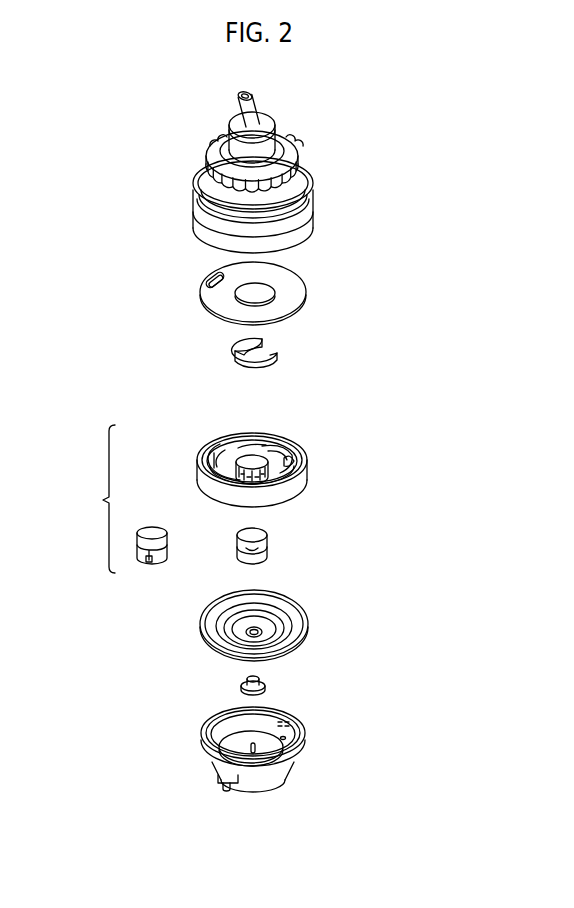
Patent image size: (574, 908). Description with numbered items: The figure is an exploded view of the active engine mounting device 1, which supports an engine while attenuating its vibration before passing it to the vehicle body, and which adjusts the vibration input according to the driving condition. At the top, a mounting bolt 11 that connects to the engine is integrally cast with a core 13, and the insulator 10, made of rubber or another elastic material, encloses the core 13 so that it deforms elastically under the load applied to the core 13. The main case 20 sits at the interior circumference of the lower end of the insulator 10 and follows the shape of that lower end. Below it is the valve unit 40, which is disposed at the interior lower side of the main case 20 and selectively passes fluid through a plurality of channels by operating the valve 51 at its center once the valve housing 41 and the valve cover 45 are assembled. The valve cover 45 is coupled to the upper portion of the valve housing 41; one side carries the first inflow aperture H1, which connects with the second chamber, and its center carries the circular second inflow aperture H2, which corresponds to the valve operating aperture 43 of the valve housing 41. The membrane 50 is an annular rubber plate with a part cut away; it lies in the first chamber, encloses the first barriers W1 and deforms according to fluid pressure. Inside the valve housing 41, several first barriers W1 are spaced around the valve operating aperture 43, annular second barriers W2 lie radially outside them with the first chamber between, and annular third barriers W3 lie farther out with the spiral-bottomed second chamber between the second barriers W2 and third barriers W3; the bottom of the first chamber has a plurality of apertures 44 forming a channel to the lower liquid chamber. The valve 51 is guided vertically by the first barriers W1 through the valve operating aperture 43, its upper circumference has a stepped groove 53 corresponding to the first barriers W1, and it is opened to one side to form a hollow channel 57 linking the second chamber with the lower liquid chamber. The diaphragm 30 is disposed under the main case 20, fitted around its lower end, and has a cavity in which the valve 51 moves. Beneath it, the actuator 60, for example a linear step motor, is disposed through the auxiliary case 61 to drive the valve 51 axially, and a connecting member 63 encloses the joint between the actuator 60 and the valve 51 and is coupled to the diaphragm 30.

The active engine mounting device 1 is at (112, 101).
The mounting bolt 11 is at (259, 103).
The core 13 is at (275, 122).
The insulator 10 is at (273, 153).
The main case 20 is at (306, 224).
The valve cover 45 is at (255, 305).
The first inflow aperture H1 is at (210, 290).
The second inflow aperture H2 is at (270, 300).
The membrane 50 is at (230, 357).
The valve unit 40 is at (231, 493).
The valve housing 41 is at (263, 445).
The valve operating aperture 43 is at (250, 464).
The aperture 44 is at (290, 460).
The first barrier W1 is at (230, 460).
The second barrier W2 is at (270, 447).
The third barrier W3 is at (293, 443).
The stepped groove 53 is at (168, 547).
The hollow channel 57 is at (145, 560).
The valve 51 is at (276, 550).
The diaphragm 30 is at (308, 622).
The connecting member 63 is at (240, 683).
The actuator 60 is at (237, 745).
The auxiliary case 61 is at (264, 745).